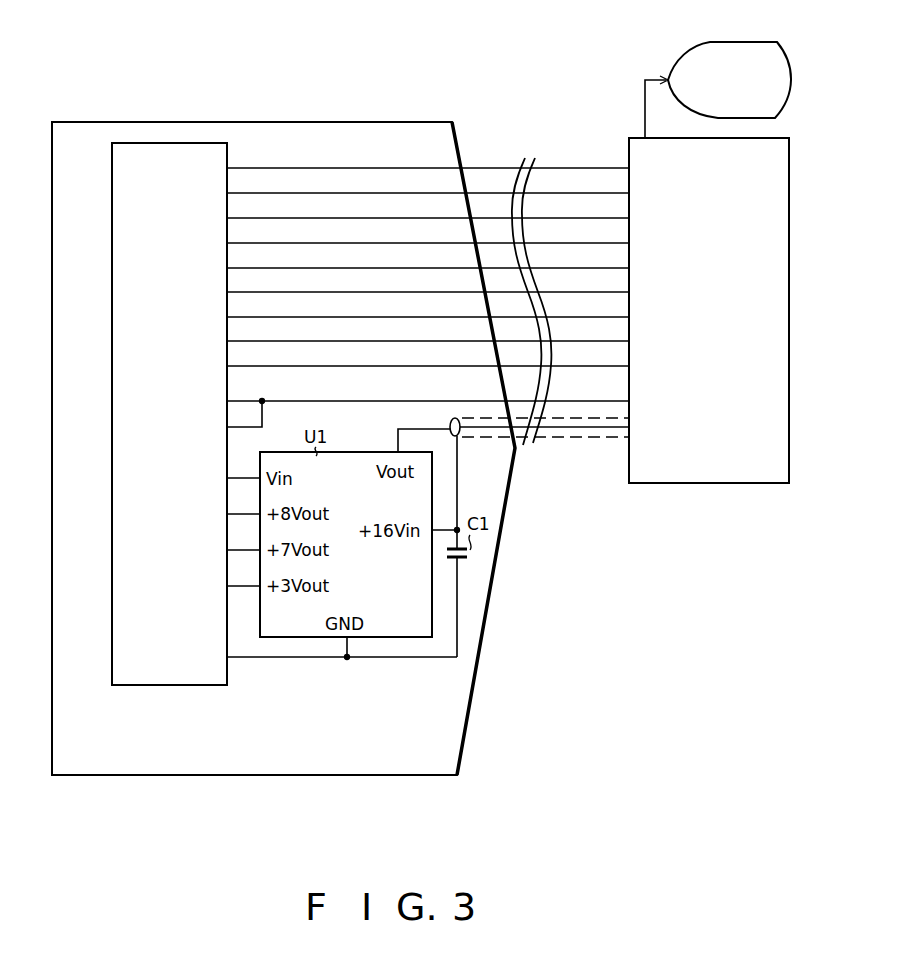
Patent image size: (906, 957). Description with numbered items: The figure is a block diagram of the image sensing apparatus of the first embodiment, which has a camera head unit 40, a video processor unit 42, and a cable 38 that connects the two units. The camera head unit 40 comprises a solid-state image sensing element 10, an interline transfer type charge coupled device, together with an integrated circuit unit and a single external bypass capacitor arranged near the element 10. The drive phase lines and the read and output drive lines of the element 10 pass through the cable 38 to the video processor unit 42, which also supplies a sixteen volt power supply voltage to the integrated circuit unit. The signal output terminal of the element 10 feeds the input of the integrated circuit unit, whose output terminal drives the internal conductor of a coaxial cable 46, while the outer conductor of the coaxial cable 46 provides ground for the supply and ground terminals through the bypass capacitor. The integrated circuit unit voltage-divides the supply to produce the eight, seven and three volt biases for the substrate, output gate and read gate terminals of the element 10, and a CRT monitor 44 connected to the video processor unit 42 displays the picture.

The solid-state image sensing element 10 is at (112, 323).
The cable 38 is at (566, 152).
The camera head unit 40 is at (298, 122).
The video processor unit 42 is at (712, 484).
The CRT monitor 44 is at (720, 42).
The coaxial cable 46 is at (575, 438).